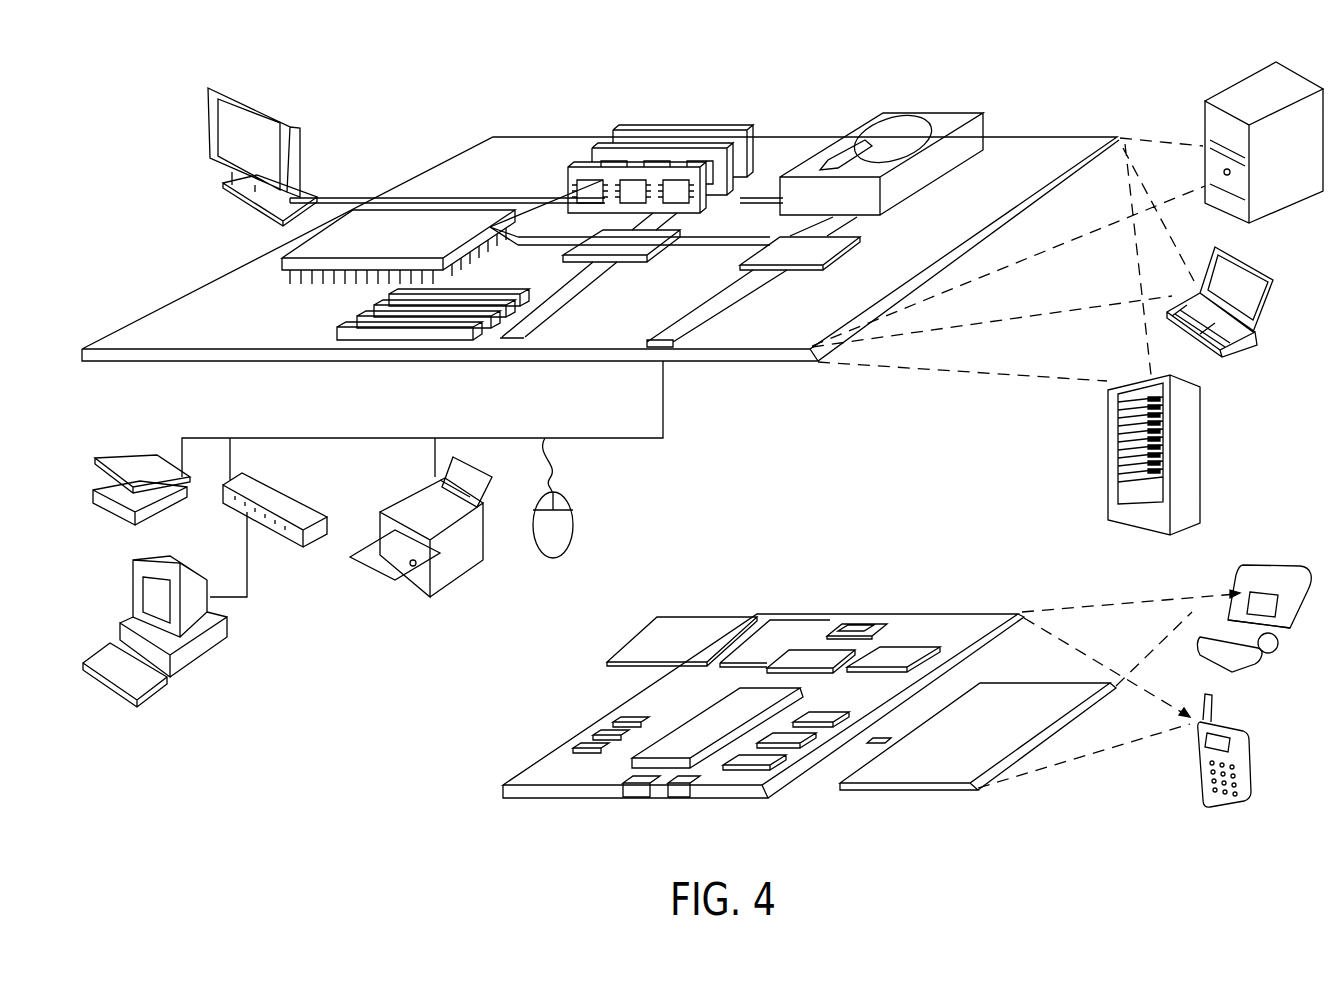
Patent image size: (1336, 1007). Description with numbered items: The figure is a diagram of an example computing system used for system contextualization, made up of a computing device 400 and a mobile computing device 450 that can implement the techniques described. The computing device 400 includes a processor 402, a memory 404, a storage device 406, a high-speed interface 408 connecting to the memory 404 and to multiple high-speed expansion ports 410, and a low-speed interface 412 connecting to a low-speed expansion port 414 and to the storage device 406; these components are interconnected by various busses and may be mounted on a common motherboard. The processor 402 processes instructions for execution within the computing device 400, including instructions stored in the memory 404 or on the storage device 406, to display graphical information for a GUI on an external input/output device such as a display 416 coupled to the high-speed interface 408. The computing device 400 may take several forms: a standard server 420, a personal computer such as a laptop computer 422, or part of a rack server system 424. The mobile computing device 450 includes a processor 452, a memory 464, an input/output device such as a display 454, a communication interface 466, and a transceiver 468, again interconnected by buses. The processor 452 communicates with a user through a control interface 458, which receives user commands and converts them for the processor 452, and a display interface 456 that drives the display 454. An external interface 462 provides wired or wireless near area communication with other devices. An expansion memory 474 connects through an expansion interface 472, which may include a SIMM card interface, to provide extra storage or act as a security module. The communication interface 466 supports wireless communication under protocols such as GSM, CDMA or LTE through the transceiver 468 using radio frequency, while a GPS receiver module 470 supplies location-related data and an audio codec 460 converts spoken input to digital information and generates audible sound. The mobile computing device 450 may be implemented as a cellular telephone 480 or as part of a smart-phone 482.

The computing device 400 is at (147, 100).
The processor 402 is at (268, 262).
The memory 404 is at (624, 99).
The storage device 406 is at (885, 116).
The high-speed interface 408 is at (540, 215).
The high-speed expansion ports 410 is at (343, 320).
The low-speed interface 412 is at (772, 242).
The low-speed expansion port 414 is at (663, 350).
The display 416 is at (270, 98).
The standard server 420 is at (1188, 112).
The laptop computer 422 is at (1240, 335).
The rack server system 424 is at (1110, 485).
The mobile computing device 450 is at (473, 762).
The processor 452 is at (690, 750).
The display 454 is at (930, 768).
The display interface 456 is at (753, 762).
The control interface 458 is at (823, 742).
The audio codec 460 is at (823, 715).
The external interface 462 is at (652, 788).
The memory 464 is at (600, 742).
The communication interface 466 is at (811, 655).
The transceiver 468 is at (893, 655).
The GPS receiver module 470 is at (860, 614).
The expansion interface 472 is at (720, 662).
The expansion memory 474 is at (663, 631).
The cellular telephone 480 is at (1265, 572).
The smart-phone 482 is at (1205, 753).